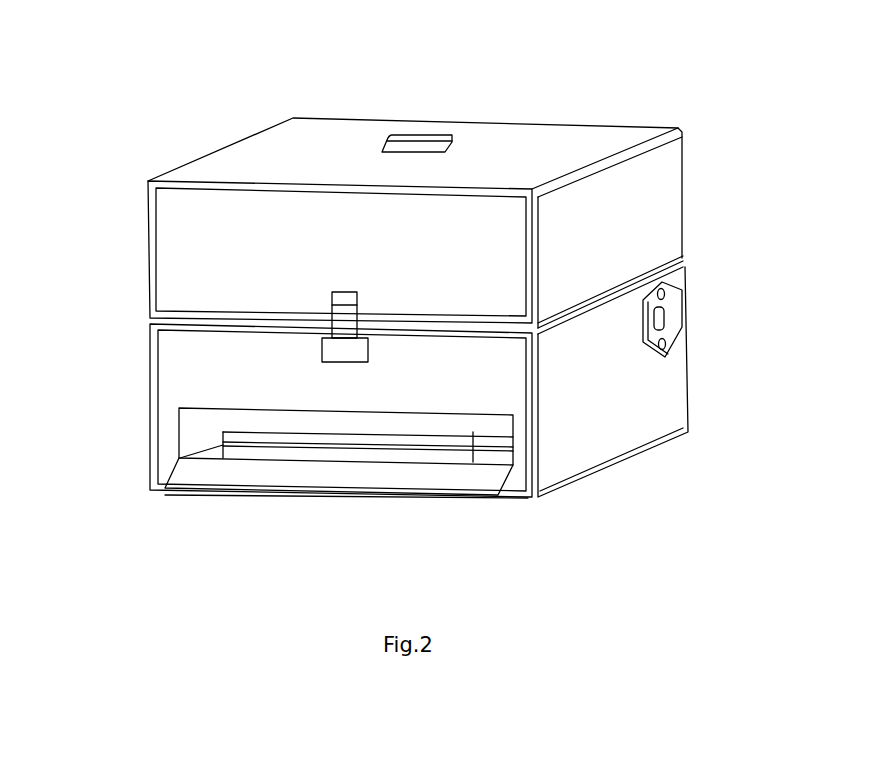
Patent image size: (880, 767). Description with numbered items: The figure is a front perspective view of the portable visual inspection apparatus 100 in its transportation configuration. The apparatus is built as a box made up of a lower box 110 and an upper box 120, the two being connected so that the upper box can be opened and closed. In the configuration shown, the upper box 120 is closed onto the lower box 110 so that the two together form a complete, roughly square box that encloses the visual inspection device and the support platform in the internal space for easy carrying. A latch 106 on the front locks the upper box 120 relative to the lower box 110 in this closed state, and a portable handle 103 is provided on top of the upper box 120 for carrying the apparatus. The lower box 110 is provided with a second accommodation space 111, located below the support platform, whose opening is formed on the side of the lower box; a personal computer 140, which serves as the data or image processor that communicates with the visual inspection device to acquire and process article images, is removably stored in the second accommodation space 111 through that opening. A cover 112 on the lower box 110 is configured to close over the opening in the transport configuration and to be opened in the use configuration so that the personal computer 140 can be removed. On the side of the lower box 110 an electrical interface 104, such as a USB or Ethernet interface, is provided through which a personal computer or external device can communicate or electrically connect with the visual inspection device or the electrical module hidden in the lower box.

The portable visual inspection apparatus 100 is at (442, 25).
The upper box 120 is at (253, 170).
The portable handle 103 is at (433, 130).
The latch 106 is at (310, 339).
The lower box 110 is at (607, 418).
The second accommodation space 111 is at (205, 426).
The personal computer 140 is at (335, 452).
The cover 112 is at (498, 495).
The electrical interface 104 is at (672, 318).